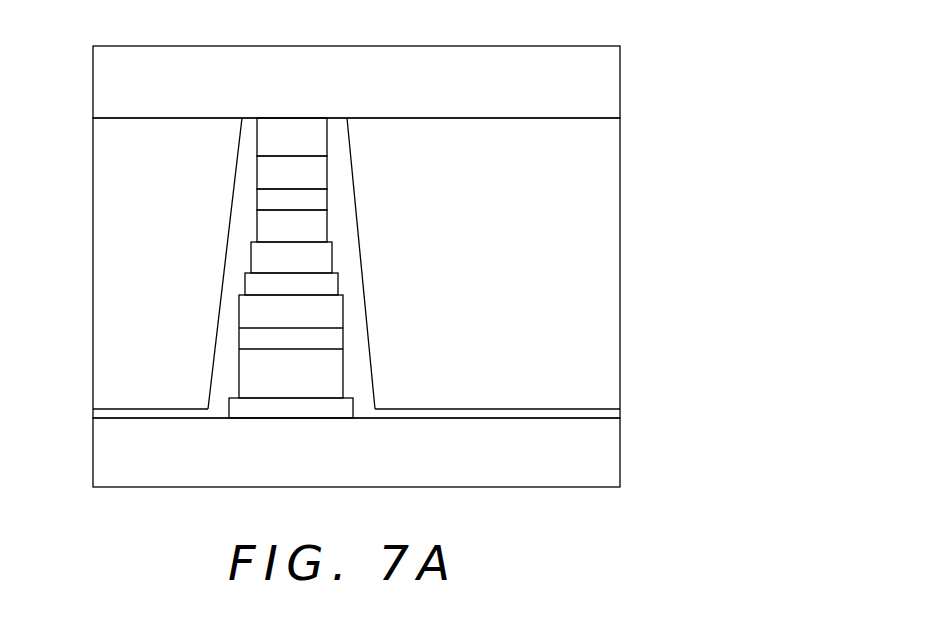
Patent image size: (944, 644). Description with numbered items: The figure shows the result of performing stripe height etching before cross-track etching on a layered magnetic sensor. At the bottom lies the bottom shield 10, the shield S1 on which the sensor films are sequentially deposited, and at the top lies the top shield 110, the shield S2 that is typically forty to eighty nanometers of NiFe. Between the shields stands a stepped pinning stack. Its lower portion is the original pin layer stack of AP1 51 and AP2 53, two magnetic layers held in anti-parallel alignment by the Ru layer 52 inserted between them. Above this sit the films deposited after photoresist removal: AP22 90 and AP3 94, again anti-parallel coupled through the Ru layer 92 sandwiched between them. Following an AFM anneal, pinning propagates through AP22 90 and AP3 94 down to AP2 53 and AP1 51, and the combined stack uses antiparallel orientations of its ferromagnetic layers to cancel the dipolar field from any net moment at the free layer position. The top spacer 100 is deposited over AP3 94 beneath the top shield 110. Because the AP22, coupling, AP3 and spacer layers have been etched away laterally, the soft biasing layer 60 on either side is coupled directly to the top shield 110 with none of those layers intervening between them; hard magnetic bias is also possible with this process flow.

The top shield 110 is at (609, 91).
The soft biasing layer 60 is at (609, 262).
The bottom shield 10 is at (609, 451).
The top spacer 100 is at (272, 139).
The AP3 layer 94 is at (272, 177).
The Ru layer 92 is at (272, 204).
The AP22 layer 90 is at (272, 233).
The AP2 layer 53 is at (272, 263).
The Ru layer 52 is at (272, 285).
The AP1 layer 51 is at (272, 312).